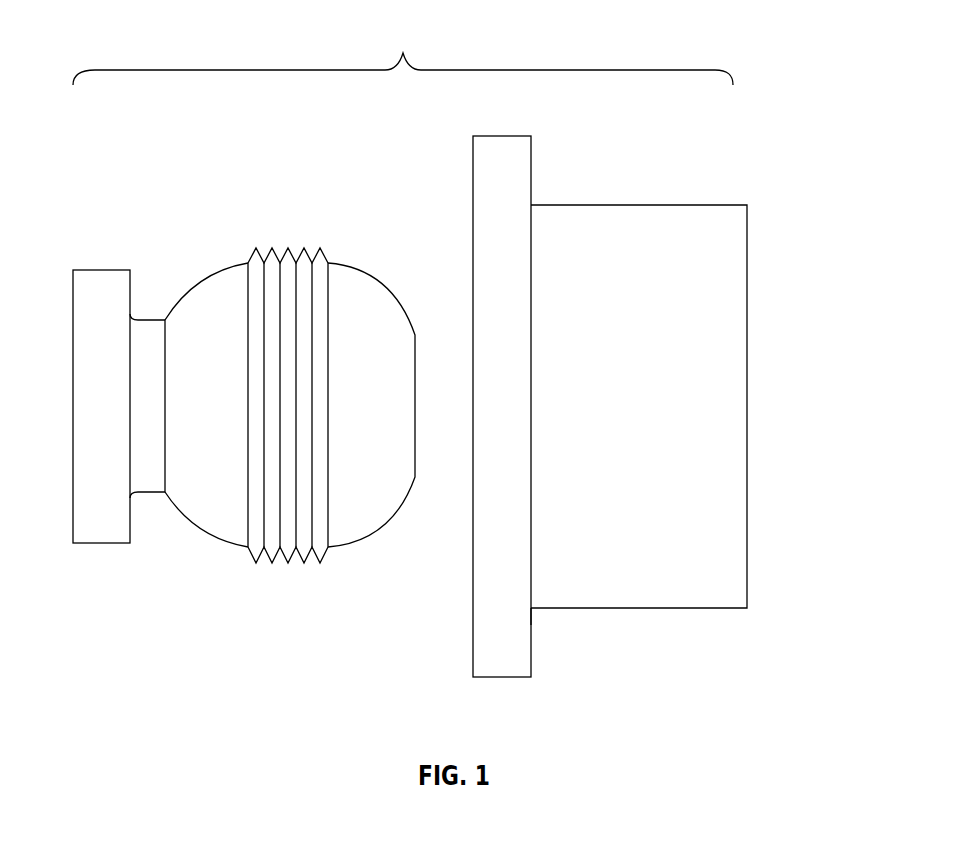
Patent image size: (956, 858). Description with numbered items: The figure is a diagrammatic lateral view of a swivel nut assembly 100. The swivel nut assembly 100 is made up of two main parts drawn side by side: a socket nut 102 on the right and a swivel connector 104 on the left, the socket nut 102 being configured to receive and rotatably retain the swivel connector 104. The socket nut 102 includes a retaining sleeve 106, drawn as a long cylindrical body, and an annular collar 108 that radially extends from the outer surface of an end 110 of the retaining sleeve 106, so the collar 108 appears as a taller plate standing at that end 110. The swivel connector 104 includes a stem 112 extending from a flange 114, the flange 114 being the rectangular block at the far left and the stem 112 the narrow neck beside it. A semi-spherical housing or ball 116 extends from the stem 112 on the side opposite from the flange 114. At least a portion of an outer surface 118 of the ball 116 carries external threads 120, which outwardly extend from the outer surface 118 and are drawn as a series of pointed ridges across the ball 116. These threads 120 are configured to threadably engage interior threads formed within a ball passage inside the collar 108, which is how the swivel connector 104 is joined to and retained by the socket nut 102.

The swivel nut assembly 100 is at (403, 50).
The socket nut 102 is at (660, 165).
The swivel connector 104 is at (208, 240).
The retaining sleeve 106 is at (747, 233).
The annular collar 108 is at (531, 663).
The end 110 is at (531, 610).
The stem 112 is at (148, 492).
The flange 114 is at (100, 543).
The ball 116 is at (365, 272).
The outer surface 118 is at (328, 547).
The external threads 120 is at (283, 265).